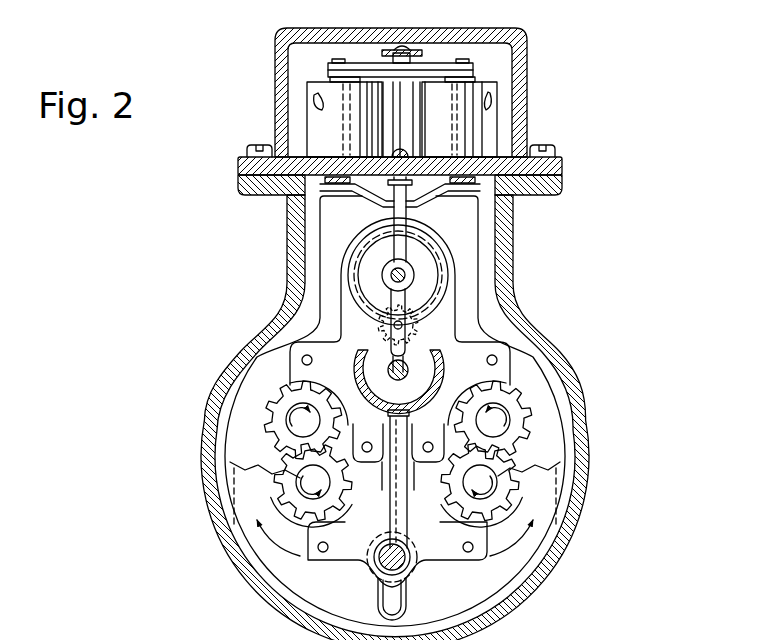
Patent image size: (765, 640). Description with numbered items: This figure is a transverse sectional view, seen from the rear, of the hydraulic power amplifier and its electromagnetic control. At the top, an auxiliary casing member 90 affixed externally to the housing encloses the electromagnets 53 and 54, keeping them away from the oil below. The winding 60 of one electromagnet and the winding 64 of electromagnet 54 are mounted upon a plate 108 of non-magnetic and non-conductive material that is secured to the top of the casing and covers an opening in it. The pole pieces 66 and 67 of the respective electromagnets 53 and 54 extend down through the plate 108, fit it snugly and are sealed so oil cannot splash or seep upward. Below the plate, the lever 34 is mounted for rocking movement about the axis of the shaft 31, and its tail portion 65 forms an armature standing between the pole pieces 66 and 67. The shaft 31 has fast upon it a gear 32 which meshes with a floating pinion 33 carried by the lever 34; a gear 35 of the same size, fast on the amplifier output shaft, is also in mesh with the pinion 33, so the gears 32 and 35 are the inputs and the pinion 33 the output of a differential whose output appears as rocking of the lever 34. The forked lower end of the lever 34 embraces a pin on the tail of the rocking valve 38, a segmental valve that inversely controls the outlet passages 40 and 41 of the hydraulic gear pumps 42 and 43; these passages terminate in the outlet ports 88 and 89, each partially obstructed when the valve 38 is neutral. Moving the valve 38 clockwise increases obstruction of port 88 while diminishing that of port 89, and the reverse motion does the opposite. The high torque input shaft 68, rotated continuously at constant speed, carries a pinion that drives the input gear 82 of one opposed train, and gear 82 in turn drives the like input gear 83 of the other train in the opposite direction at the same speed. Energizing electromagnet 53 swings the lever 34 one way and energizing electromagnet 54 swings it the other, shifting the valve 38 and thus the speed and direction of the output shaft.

The auxiliary casing member 90 is at (520, 63).
The electromagnet 54 is at (404, 101).
The electromagnet 53 is at (298, 123).
The winding 60 is at (278, 140).
The winding 64 is at (498, 131).
The plate 108 is at (288, 197).
The pole piece 66 is at (386, 192).
The pole piece 67 is at (419, 194).
The tail portion 65 is at (512, 214).
The lever 34 is at (397, 226).
The shaft 31 is at (411, 273).
The gear 32 is at (428, 288).
The floating pinion 33 is at (414, 325).
The gear 35 is at (421, 350).
The rocking valve 38 is at (468, 382).
The outlet port 88 is at (368, 439).
The outlet port 89 is at (428, 439).
The outlet passage 40 is at (384, 479).
The outlet passage 41 is at (397, 527).
The hydraulic gear pump 42 is at (278, 456).
The hydraulic gear pump 43 is at (524, 455).
The high torque input shaft 68 is at (403, 562).
The input gear 82 is at (300, 553).
The input gear 83 is at (490, 553).